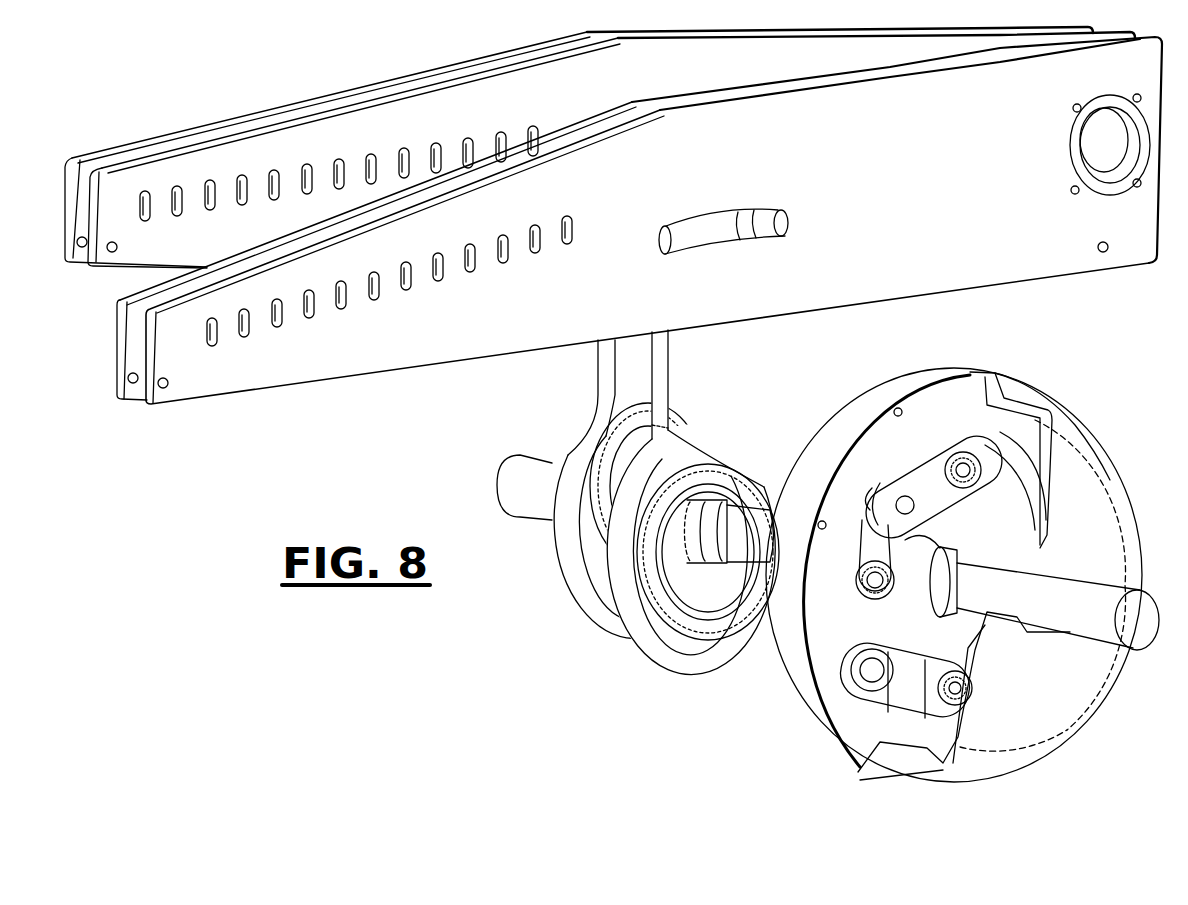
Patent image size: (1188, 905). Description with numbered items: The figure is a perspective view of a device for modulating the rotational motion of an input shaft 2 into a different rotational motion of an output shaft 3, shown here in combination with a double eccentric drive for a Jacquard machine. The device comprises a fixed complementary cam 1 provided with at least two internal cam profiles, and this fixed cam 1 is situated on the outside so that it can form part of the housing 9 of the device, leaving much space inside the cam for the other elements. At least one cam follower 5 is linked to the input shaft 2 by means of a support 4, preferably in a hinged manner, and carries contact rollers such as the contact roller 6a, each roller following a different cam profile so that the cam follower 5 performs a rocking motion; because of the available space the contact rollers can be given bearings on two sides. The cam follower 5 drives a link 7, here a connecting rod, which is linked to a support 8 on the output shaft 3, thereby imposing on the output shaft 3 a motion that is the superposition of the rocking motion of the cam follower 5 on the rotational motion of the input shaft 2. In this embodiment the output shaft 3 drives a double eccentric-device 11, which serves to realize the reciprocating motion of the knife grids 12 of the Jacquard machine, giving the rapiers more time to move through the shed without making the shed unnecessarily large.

The fixed complementary cam 1 is at (947, 393).
The input shaft 2 is at (1097, 628).
The output shaft 3 is at (753, 520).
The support 4 is at (947, 533).
The cam follower 5 is at (990, 447).
The contact roller 6a is at (870, 497).
The link 7 is at (870, 530).
The support 8 is at (850, 535).
The housing 9 is at (954, 575).
The double eccentric-device 11 is at (635, 463).
The knife grids 12 is at (613, 215).